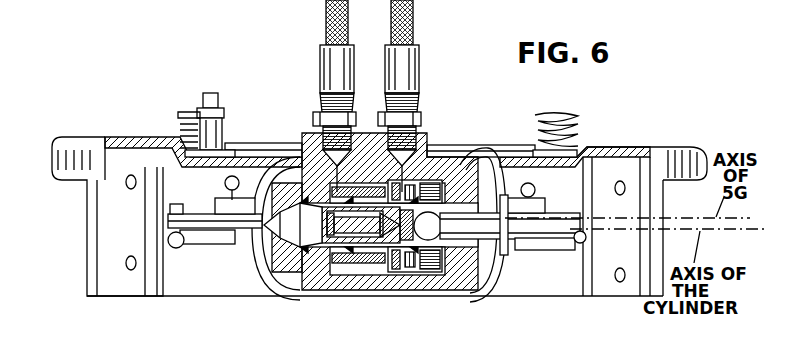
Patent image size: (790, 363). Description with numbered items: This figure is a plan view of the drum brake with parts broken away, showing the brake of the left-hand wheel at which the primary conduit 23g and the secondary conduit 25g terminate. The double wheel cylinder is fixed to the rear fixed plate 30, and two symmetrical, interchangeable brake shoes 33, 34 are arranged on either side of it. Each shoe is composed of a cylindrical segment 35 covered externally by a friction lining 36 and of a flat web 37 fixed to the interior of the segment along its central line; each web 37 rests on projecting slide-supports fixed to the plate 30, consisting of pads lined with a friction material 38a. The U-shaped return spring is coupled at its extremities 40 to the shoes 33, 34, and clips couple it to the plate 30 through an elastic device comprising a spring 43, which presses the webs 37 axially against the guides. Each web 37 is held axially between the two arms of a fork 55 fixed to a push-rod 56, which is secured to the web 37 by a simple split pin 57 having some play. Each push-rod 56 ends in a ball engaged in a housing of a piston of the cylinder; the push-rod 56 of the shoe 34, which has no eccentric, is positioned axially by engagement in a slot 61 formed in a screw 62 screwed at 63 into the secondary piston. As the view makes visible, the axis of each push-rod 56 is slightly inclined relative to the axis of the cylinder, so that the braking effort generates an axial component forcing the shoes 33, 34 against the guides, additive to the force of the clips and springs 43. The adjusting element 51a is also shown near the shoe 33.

The primary conduit 23g is at (323, 52).
The secondary conduit 25g is at (412, 78).
The adjusting screw 51a is at (219, 95).
The spring 43 is at (184, 112).
The split pin 57 is at (232, 176).
The fork 55 is at (243, 202).
The cylindrical segment 35 is at (162, 210).
The friction lining 36 is at (150, 214).
The extremity 40 is at (180, 244).
The friction material 38a is at (208, 214).
The web 37 is at (164, 242).
The brake shoe 33 is at (135, 297).
The push-rod 56 is at (305, 240).
The screw 62 is at (458, 267).
The screw thread location 63 is at (470, 272).
The slot 61 is at (506, 243).
The rear fixed plate 30 is at (623, 146).
The brake shoe 34 is at (623, 294).